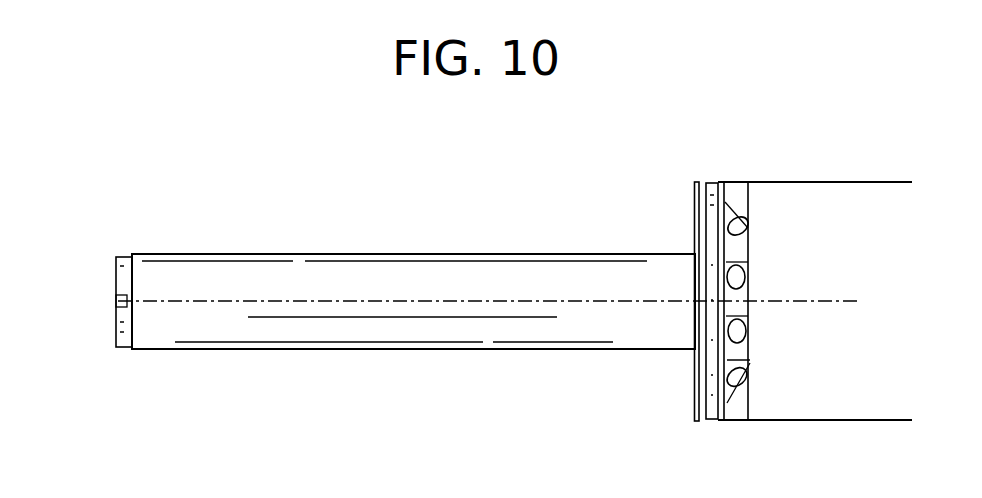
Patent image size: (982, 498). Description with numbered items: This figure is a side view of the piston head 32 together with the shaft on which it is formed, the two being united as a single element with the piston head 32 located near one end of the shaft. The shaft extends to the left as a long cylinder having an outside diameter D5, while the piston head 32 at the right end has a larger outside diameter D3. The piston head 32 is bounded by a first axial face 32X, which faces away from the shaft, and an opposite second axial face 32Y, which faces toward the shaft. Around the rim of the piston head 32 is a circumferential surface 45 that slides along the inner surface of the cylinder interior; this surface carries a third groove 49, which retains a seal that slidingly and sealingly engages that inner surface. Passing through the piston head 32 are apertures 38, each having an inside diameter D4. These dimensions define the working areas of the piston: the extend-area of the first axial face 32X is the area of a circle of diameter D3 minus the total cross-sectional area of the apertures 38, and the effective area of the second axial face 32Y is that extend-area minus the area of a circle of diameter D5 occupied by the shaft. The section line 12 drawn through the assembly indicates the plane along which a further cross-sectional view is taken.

The section line 12- 12 is at (118, 301).
The piston head 32 is at (585, 197).
The first axial face 32X is at (764, 344).
The second axial face 32Y is at (683, 381).
The apertures 38 is at (763, 322).
The circumferential surface 45 is at (696, 174).
The third groove 49 is at (712, 170).
The outside diameter of the piston head D3 is at (898, 408).
The inside diameter of the apertures D4 is at (669, 273).
The outside diameter of the shaft D5 is at (275, 400).